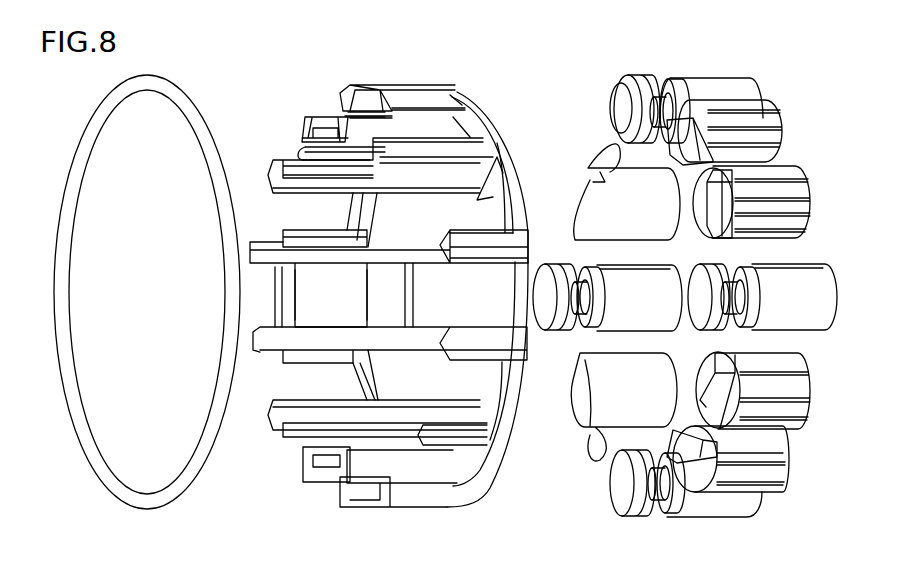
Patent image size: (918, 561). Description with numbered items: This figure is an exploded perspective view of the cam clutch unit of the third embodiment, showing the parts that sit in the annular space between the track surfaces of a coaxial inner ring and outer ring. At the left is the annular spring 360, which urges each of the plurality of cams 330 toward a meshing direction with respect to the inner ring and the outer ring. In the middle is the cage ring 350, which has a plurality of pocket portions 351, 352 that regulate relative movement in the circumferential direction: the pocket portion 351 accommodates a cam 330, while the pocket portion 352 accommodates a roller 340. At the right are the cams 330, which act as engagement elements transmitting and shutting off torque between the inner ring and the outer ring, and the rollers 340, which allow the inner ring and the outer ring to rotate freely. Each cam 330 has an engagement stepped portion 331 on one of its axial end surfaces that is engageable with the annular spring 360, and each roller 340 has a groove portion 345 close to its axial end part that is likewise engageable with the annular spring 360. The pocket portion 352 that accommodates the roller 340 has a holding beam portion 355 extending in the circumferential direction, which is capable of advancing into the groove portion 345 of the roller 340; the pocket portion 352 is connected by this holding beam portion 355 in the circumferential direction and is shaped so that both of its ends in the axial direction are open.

The annular spring 360 is at (91, 142).
The cage ring 350 is at (395, 299).
The pocket portion 351 is at (477, 203).
The pocket portion 352 is at (493, 310).
The holding beam portion 355 is at (290, 297).
The cam 330 is at (772, 172).
The engagement stepped portion 331 is at (717, 192).
The groove portion 345 is at (726, 265).
The roller 340 is at (790, 305).